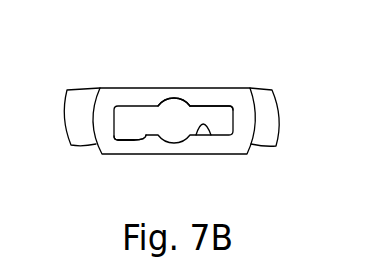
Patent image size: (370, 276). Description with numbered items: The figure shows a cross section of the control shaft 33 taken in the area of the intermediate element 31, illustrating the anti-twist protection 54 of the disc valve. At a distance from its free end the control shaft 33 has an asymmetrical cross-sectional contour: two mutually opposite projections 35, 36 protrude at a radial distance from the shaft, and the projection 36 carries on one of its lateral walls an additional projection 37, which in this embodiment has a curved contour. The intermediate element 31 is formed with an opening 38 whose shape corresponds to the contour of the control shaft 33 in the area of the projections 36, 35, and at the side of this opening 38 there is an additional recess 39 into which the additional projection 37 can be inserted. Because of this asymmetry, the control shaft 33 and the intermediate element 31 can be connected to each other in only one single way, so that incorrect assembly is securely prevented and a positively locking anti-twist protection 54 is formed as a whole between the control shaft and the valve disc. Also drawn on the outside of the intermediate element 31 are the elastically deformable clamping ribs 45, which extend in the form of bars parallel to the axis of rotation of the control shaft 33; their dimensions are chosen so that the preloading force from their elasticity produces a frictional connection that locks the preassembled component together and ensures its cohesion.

The intermediate element 31 is at (236, 148).
The control shaft 33 is at (180, 108).
The projection 35 is at (272, 90).
The projection 36 is at (135, 110).
The additional projection 37 is at (131, 132).
The opening 38 is at (212, 136).
The additional recess 39 is at (131, 142).
The clamping ribs 45 is at (84, 126).
The anti-twist protection 54 is at (209, 99).